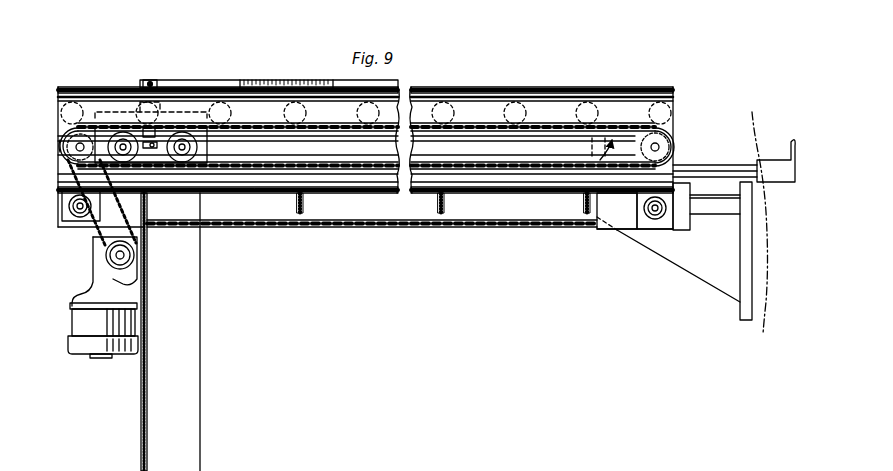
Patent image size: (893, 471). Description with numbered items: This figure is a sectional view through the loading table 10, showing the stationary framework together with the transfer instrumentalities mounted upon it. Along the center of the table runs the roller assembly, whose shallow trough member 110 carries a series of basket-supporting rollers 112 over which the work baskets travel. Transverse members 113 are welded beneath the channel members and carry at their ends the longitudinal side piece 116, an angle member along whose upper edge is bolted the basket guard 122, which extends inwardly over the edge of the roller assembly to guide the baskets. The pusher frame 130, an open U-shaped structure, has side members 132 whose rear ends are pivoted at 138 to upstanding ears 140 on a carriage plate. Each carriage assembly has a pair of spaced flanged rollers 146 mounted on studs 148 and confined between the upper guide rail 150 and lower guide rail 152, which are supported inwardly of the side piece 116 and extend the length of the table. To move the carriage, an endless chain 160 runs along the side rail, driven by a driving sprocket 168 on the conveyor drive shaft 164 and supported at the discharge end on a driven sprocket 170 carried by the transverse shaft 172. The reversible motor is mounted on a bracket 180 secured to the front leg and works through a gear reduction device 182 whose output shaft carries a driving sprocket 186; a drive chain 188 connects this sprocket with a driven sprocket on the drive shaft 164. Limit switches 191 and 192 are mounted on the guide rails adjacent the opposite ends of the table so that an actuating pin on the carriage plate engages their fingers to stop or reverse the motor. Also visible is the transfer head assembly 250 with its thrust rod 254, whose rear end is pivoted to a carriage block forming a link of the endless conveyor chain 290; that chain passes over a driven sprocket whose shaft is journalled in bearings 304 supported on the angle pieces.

The loading table 10 is at (544, 86).
The shallow trough member 110 is at (474, 178).
The basket-supporting rollers 112 is at (456, 116).
The transverse members 113 is at (306, 213).
The side piece 116 is at (523, 225).
The basket guard 122 is at (596, 89).
The pusher frame 130 is at (228, 78).
The side members 132 is at (198, 80).
The pivot 138 is at (150, 82).
The upstanding ears 140 is at (165, 110).
The flanged rollers 146 is at (123, 130).
The studs 148 is at (184, 155).
The upper guide rail 150 is at (552, 139).
The lower guide rail 152 is at (564, 158).
The endless chain 160 is at (59, 146).
The conveyor drive shaft 164 is at (76, 150).
The driving sprocket 168 is at (65, 144).
The driven sprocket 170 is at (664, 146).
The transverse shaft 172 is at (664, 144).
The bracket 180 is at (150, 266).
The gear reduction device 182 is at (96, 252).
The driving sprocket 186 is at (134, 254).
The drive chain 188 is at (148, 218).
The limit switch 191 is at (150, 154).
The limit switch 192 is at (617, 211).
The transfer head assembly 250 is at (782, 185).
The thrust rod 254 is at (702, 166).
The endless conveyor chain 290 is at (264, 228).
The bearings 304 is at (654, 224).